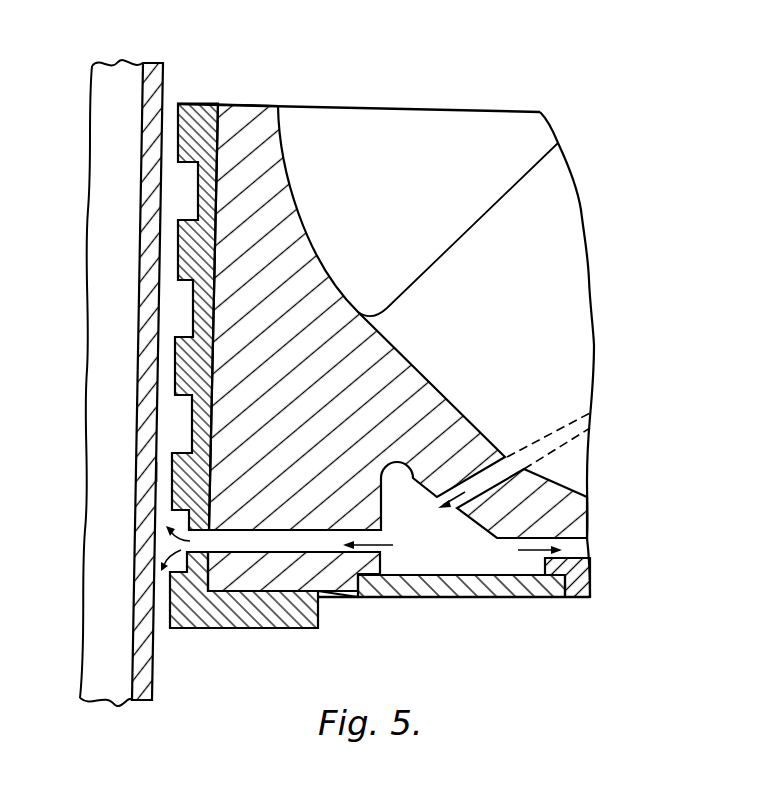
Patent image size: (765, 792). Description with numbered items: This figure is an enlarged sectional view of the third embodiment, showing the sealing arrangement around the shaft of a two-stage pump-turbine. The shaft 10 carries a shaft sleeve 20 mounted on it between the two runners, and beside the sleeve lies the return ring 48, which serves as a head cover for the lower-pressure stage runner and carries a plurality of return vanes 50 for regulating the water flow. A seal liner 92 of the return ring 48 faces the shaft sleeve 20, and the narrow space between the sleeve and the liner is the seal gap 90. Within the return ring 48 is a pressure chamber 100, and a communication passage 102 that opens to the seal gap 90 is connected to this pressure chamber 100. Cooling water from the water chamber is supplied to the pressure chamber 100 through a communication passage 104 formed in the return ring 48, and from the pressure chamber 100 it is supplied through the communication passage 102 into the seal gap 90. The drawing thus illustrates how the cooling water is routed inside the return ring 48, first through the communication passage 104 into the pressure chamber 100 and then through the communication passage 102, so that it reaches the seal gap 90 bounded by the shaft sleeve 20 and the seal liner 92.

The shaft 10 is at (103, 89).
The shaft sleeve 20 is at (157, 96).
The return ring 48 is at (278, 178).
The return vanes 50 is at (478, 233).
The seal gap 90 is at (162, 472).
The seal liner 92 is at (202, 110).
The pressure chamber 100 is at (440, 543).
The communication passage 102 is at (317, 545).
The communication passage 104 is at (548, 436).